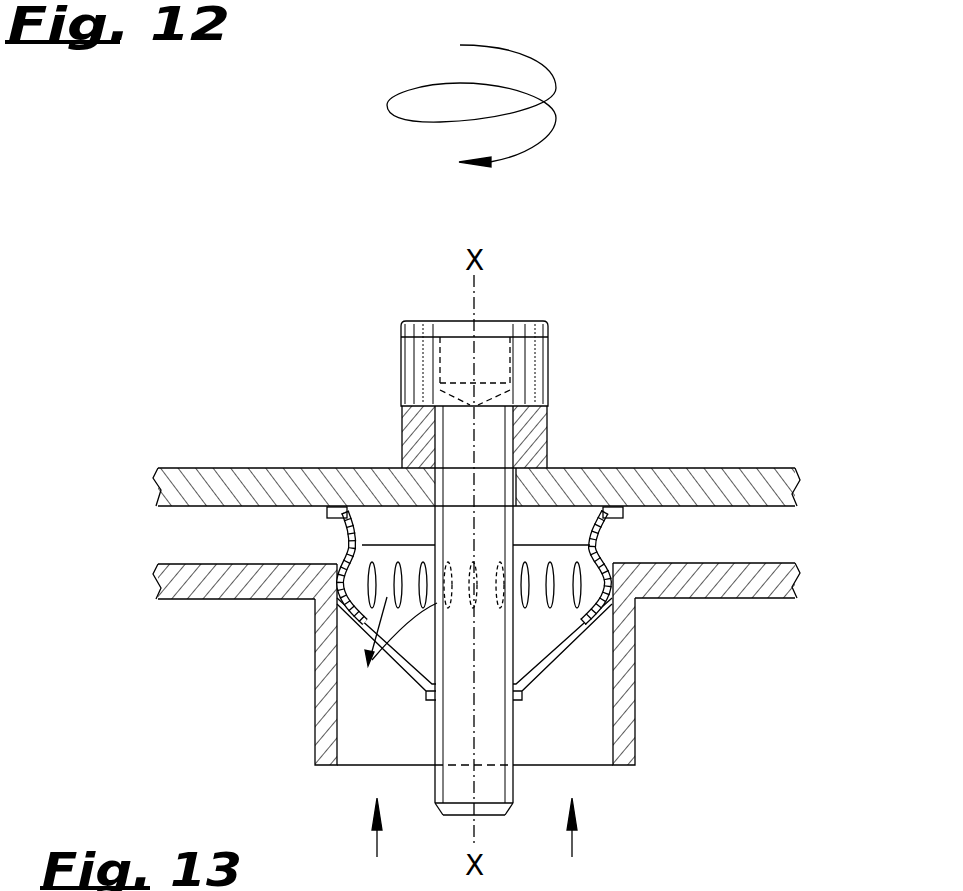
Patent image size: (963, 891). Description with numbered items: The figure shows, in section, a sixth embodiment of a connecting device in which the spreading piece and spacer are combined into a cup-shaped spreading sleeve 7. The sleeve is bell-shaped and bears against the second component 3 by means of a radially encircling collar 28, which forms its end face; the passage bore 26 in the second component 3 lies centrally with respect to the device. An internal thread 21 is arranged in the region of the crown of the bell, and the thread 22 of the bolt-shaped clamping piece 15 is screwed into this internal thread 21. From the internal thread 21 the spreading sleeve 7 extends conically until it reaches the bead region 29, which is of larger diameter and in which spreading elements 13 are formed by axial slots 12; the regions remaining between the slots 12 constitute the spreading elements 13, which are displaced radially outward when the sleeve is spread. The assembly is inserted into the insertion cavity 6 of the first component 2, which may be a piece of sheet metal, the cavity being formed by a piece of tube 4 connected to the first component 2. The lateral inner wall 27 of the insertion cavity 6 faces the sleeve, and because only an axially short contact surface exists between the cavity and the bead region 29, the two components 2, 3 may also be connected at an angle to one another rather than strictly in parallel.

The first component 2 is at (780, 563).
The second component 3 is at (765, 468).
The piece of tube 4 is at (620, 662).
The insertion cavity 6 is at (600, 727).
The spreading sleeve 7 is at (318, 542).
The slots 12 is at (440, 553).
The spreading elements 13 is at (396, 652).
The clamping piece 15 is at (548, 350).
The internal thread 21 is at (520, 705).
The thread 22 is at (510, 457).
The passage bore 26 is at (432, 477).
The inner wall 27 is at (345, 712).
The radially encircling collar 28 is at (613, 506).
The bead region 29 is at (340, 612).